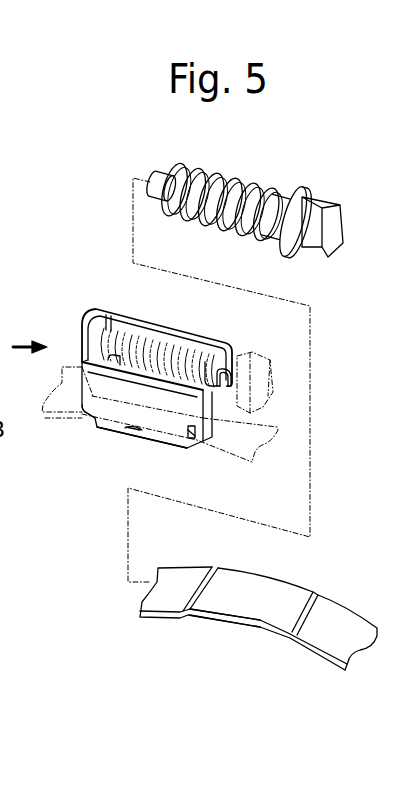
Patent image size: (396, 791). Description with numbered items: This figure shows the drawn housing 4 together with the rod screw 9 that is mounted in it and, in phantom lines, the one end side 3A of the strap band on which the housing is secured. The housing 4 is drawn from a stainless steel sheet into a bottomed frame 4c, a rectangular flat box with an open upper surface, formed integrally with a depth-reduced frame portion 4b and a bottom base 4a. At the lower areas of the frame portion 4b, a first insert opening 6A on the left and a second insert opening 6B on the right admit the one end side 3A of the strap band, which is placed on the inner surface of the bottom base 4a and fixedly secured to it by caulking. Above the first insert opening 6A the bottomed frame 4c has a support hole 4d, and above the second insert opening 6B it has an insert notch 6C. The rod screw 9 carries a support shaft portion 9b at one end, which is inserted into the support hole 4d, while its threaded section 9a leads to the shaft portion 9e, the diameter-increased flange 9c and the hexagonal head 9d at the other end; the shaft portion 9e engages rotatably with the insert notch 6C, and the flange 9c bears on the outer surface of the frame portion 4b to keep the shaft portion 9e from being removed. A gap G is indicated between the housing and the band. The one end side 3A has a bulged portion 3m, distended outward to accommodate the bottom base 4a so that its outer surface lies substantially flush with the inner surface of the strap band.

The rod screw 9 is at (284, 174).
The threaded portion 9a is at (217, 180).
The support shaft portion 9b is at (158, 173).
The flange 9c is at (306, 200).
The hexagonal head 9d is at (334, 226).
The shaft portion 9e is at (270, 224).
The housing 4 is at (171, 389).
The bottom base 4a is at (157, 444).
The frame portion 4b is at (135, 402).
The bottomed frame 4c is at (167, 317).
The support hole 4d is at (85, 322).
The first insert opening 6A is at (92, 378).
The second insert opening 6B is at (214, 405).
The insert notch 6C is at (224, 372).
The gap G is at (131, 428).
The one end side of the strap band 3A is at (163, 607).
The bulged portion 3m is at (237, 623).